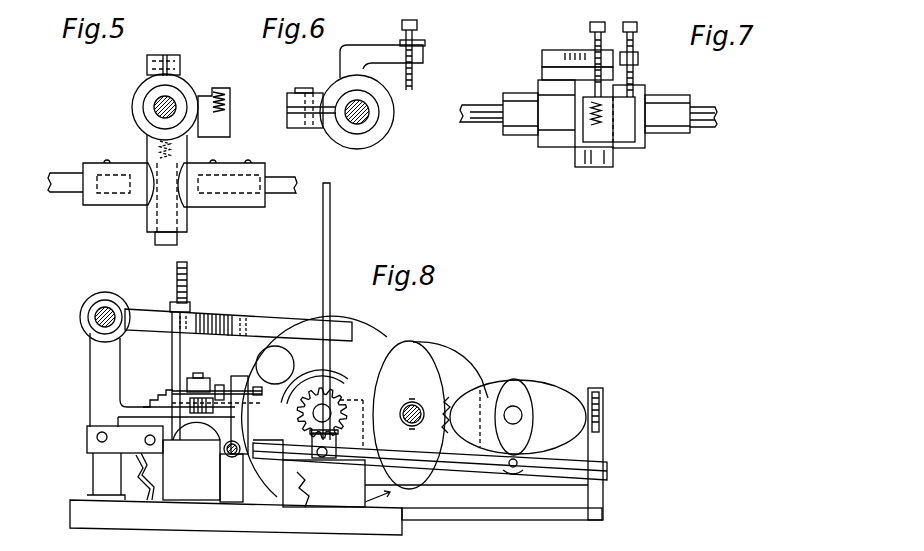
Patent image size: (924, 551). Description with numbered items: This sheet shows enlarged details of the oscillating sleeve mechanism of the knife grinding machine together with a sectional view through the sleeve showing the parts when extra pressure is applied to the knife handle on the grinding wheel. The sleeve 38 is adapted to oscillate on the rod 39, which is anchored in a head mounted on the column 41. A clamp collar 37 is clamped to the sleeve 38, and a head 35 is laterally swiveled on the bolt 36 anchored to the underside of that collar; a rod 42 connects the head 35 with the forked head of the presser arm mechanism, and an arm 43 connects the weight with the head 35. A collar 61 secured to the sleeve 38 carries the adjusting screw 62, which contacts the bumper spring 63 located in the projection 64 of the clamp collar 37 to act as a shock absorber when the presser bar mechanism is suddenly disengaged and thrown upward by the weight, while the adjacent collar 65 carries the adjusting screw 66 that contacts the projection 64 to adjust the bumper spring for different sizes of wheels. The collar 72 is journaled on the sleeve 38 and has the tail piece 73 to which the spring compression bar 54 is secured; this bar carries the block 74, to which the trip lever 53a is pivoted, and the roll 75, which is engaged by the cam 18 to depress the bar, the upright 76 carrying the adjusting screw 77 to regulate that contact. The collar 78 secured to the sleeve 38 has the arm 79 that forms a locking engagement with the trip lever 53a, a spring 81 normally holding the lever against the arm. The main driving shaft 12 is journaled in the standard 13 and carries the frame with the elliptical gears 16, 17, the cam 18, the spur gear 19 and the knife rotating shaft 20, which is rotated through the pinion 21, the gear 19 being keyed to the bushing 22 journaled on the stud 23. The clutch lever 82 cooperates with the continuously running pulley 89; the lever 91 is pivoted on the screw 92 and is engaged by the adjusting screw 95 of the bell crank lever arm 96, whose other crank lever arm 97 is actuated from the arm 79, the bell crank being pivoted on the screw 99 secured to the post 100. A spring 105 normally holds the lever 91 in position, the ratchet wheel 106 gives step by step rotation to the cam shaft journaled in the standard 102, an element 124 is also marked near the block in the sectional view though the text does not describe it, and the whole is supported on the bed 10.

In FIG. 8, the bed 10 is at (75, 513).
In FIG. 8, the main driving shaft 12 is at (300, 430).
In FIG. 8, the standard 13 is at (352, 508).
In FIG. 8, the elliptical gear 16 is at (411, 415).
In FIG. 8, the elliptical gear 17 is at (518, 417).
In FIG. 8, the cam 18 is at (518, 386).
In FIG. 8, the spur gear 19 is at (466, 372).
In FIG. 8, the knife rotating shaft 20 is at (521, 415).
In FIG. 8, the pinion 21 is at (350, 362).
In FIG. 8, the bushing 22 is at (405, 408).
In FIG. 8, the stud 23 is at (414, 424).
In FIG. 5, the head 35 is at (120, 163).
In FIG. 5, the bolt 36 is at (156, 242).
In FIG. 5, the clamp collar 37 is at (138, 92).
In FIG. 7, the clamp collar 37 is at (575, 105).
In FIG. 5, the sleeve 38 is at (150, 107).
In FIG. 7, the sleeve 38 is at (514, 93).
In FIG. 8, the sleeve 38 is at (112, 304).
In FIG. 5, the rod 39 is at (172, 100).
In FIG. 6, the rod 39 is at (368, 112).
In FIG. 7, the rod 39 is at (718, 116).
In FIG. 8, the rod 39 is at (122, 326).
In FIG. 8, the column 41 is at (106, 476).
In FIG. 5, the rod 42 is at (277, 178).
In FIG. 5, the arm 43 is at (60, 172).
In FIG. 8, the trip lever 53a is at (331, 217).
In FIG. 8, the spring compression bar 54 is at (87, 437).
In FIG. 6, the collar 61 is at (384, 124).
In FIG. 7, the collar 61 is at (575, 123).
In FIG. 6, the adjusting screw 62 is at (413, 78).
In FIG. 7, the adjusting screw 62 is at (590, 33).
In FIG. 5, the bumper spring 63 is at (227, 88).
In FIG. 7, the bumper spring 63 is at (592, 110).
In FIG. 5, the projection 64 is at (230, 114).
In FIG. 7, the projection 64 is at (626, 147).
In FIG. 7, the collar 65 is at (645, 95).
In FIG. 7, the adjusting screw 66 is at (637, 36).
In FIG. 8, the collar 72 is at (92, 320).
In FIG. 8, the tail piece 73 is at (90, 371).
In FIG. 8, the block 74 is at (338, 470).
In FIG. 8, the roll 75 is at (522, 472).
In FIG. 8, the upright 76 is at (603, 433).
In FIG. 8, the adjusting screw 77 is at (603, 407).
In FIG. 8, the collar 78 is at (82, 304).
In FIG. 8, the arm 79 is at (262, 310).
In FIG. 8, the spring 81 is at (318, 461).
In FIG. 8, the clutch lever 82 is at (117, 408).
In FIG. 8, the driving pulley 89 is at (380, 336).
In FIG. 8, the lever 91 is at (221, 385).
In FIG. 8, the screw 92 is at (198, 373).
In FIG. 8, the adjusting screw 95 is at (275, 365).
In FIG. 8, the bell crank lever arm 96 is at (177, 285).
In FIG. 8, the crank lever arm 97 is at (196, 462).
In FIG. 8, the screw 99 is at (228, 458).
In FIG. 8, the post 100 is at (245, 502).
In FIG. 8, the standard 102 is at (177, 506).
In FIG. 8, the spring 105 is at (150, 396).
In FIG. 8, the ratchet wheel 106 is at (140, 466).
In FIG. 8, the crack line 124 is at (318, 508).